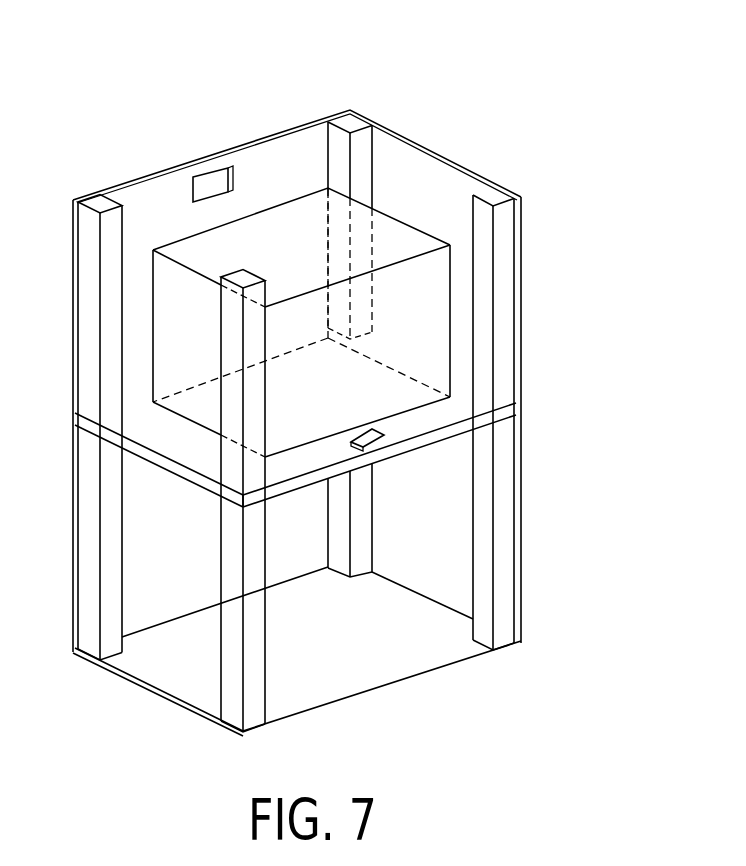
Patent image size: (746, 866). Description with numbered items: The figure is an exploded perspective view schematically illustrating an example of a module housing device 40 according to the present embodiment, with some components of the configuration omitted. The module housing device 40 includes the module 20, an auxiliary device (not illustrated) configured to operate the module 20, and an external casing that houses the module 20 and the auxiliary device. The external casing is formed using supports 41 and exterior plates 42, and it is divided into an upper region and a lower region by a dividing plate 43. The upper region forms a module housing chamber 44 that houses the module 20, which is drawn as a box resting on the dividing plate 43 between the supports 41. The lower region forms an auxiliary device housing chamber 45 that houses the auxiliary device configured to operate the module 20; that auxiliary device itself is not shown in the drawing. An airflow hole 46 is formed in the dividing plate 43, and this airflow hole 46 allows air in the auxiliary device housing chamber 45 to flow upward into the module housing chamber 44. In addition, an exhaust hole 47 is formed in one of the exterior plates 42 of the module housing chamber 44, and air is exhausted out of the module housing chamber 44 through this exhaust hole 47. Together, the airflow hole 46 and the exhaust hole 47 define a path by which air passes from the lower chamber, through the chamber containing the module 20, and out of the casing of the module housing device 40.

The module 20 is at (400, 237).
The module housing device 40 is at (246, 64).
The supports 41 is at (100, 202).
The exterior plates 42 is at (388, 125).
The dividing plate 43 is at (503, 415).
The module housing chamber 44 is at (407, 177).
The auxiliary device housing chamber 45 is at (157, 543).
The airflow hole 46 is at (400, 438).
The exhaust hole 47 is at (207, 182).